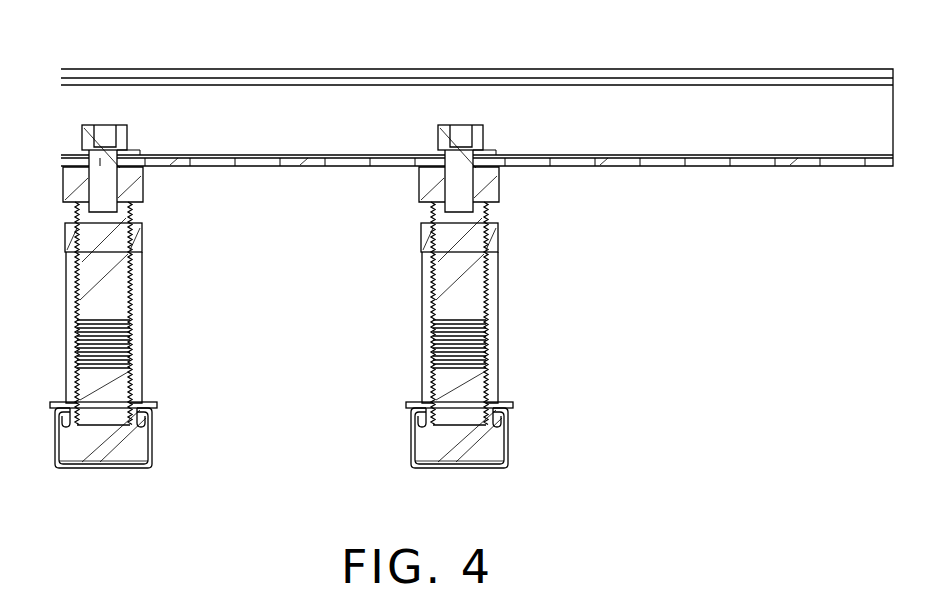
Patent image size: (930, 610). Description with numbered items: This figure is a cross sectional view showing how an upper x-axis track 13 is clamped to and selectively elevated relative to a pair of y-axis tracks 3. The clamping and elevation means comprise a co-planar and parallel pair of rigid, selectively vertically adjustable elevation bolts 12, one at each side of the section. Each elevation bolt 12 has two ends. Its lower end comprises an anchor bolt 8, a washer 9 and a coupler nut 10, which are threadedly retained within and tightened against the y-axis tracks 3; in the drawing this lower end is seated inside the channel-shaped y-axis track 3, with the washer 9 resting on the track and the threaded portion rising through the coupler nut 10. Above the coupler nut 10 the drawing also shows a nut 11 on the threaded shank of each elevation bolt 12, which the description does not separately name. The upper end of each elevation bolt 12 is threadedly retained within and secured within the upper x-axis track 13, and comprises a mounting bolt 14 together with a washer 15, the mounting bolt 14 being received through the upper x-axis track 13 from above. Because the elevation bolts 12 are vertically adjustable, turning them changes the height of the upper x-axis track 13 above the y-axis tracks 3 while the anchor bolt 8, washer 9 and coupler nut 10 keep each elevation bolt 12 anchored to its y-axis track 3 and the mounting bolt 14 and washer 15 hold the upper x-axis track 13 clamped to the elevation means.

The upper x-axis track 13 is at (268, 105).
The mounting bolt 14 is at (110, 138).
The washer 15 is at (128, 152).
The elevation bolt 12 is at (75, 185).
The nut 11 is at (72, 240).
The coupler nut 10 is at (68, 297).
The washer 9 is at (63, 403).
The y-axis track 3 is at (55, 430).
The anchor bolt 8 is at (80, 446).